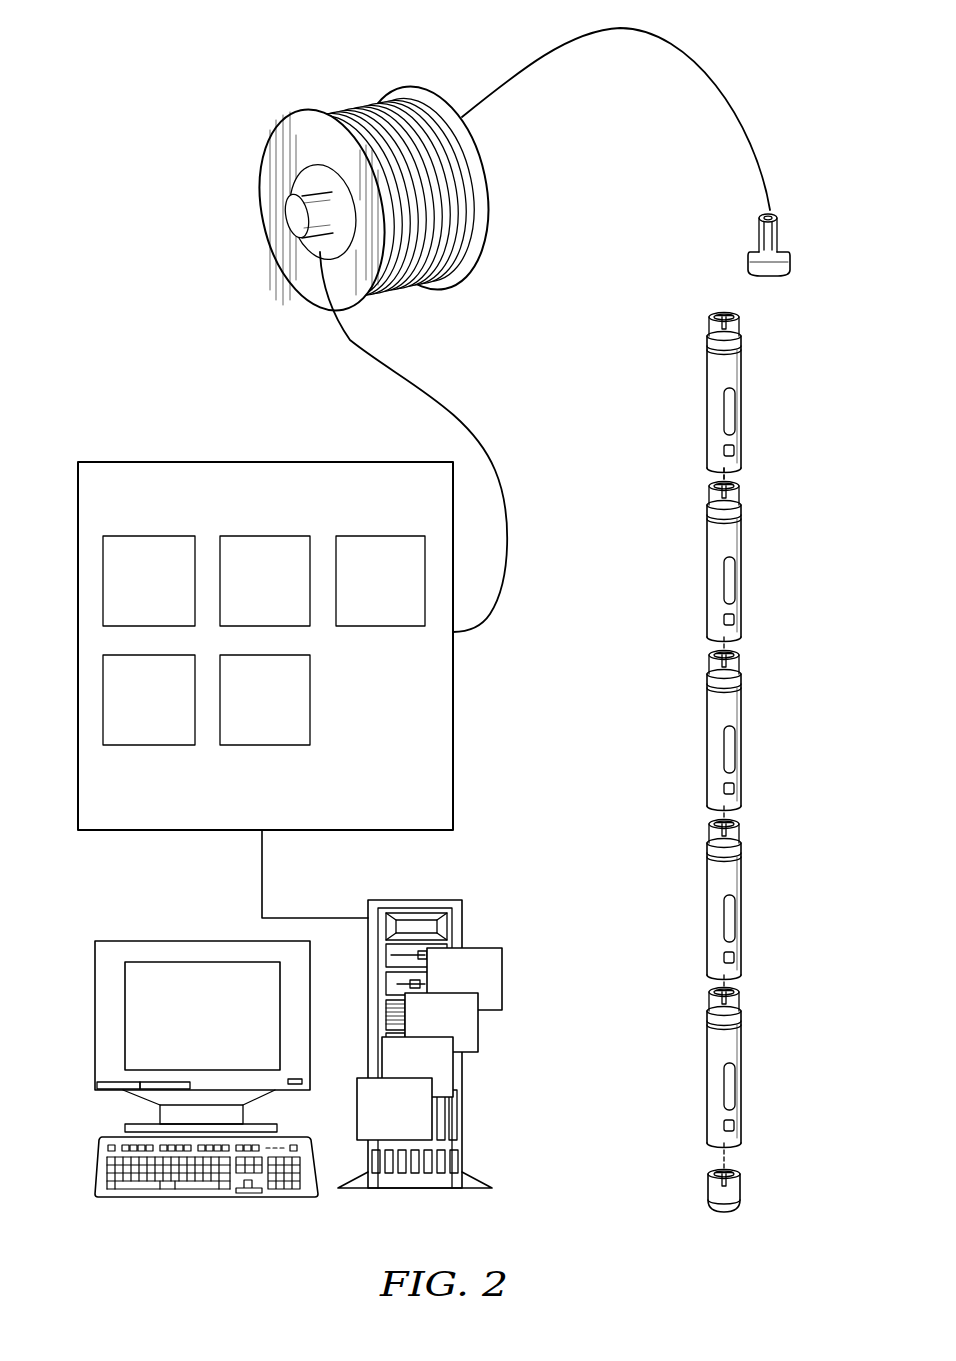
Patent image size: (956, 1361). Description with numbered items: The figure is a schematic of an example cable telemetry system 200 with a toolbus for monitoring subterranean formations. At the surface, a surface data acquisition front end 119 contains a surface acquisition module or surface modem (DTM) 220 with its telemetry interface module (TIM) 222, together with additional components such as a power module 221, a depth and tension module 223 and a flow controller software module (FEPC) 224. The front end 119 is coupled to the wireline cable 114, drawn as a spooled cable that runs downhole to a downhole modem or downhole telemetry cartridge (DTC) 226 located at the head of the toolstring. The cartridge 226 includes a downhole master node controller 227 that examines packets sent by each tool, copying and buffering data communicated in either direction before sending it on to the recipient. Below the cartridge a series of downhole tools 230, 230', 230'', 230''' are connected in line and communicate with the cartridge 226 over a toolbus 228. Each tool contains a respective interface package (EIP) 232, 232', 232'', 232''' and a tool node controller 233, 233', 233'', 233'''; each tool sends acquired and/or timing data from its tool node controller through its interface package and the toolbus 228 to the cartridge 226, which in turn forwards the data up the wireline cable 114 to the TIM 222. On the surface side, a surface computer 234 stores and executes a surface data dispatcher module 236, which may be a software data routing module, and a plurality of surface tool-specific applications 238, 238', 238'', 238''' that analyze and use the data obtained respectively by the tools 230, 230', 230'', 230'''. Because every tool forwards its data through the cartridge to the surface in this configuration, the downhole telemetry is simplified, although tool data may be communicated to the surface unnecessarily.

The cable telemetry system 200 is at (120, 85).
The wireline cable 114 is at (485, 102).
The surface data acquisition front end 119 is at (140, 503).
The surface acquisition module/surface modem (DTM) 220 is at (168, 597).
The power module 221 is at (284, 597).
The telemetry interface module (TIM) 222 is at (400, 597).
The depth and tension module 223 is at (168, 713).
The flow controller software module (FEPC) 224 is at (284, 713).
The downhole modem (DTC) / downhole telemetry cartridge 226 is at (742, 383).
The downhole master node controller 227 is at (738, 450).
The toolbus 228 is at (727, 476).
The downhole tool 230 is at (761, 567).
The interface package (EIP) 232 is at (770, 571).
The tool node controller 233 is at (770, 602).
The downhole tool 230' is at (763, 736).
The interface package (EIP) 232' is at (772, 740).
The tool node controller 233' is at (772, 771).
The downhole tool 230'' is at (765, 905).
The interface package (EIP) 232'' is at (774, 909).
The tool node controller 233'' is at (774, 940).
The downhole tool 230''' is at (767, 1079).
The interface package (EIP) 232''' is at (776, 1077).
The tool node controller 233''' is at (776, 1108).
The surface computer 234 is at (178, 940).
The surface data dispatcher module 236 is at (465, 912).
The surface tool-specific application 238 is at (394, 1109).
The surface tool-specific application 238' is at (417, 1067).
The surface tool-specific application 238'' is at (441, 1022).
The surface tool-specific application 238''' is at (464, 979).